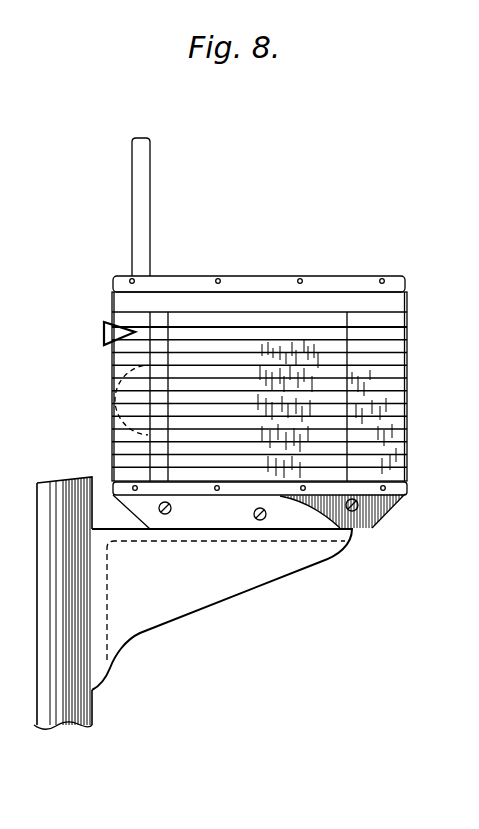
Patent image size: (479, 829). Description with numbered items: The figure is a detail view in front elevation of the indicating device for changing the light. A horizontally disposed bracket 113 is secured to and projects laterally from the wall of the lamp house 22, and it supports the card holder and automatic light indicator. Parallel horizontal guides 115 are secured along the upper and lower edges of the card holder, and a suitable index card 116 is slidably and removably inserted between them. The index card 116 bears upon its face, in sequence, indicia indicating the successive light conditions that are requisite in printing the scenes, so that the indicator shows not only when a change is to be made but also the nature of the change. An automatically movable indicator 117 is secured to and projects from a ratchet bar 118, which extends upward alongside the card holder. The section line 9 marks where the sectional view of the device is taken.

The section line 9 is at (149, 125).
The post 22 is at (93, 713).
The bracket 113 is at (205, 598).
The clamping plate 115 is at (321, 278).
The index card 116 is at (405, 368).
The start pointer 117 is at (104, 331).
The rod 118 is at (142, 190).